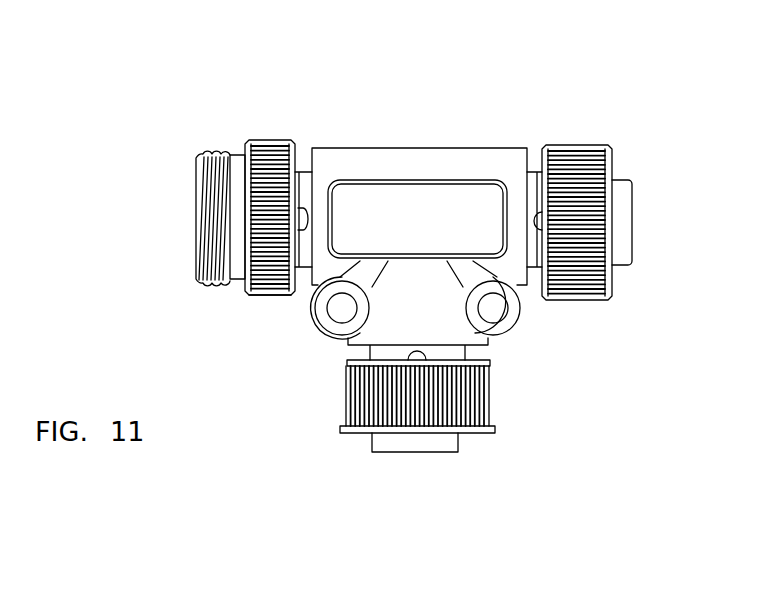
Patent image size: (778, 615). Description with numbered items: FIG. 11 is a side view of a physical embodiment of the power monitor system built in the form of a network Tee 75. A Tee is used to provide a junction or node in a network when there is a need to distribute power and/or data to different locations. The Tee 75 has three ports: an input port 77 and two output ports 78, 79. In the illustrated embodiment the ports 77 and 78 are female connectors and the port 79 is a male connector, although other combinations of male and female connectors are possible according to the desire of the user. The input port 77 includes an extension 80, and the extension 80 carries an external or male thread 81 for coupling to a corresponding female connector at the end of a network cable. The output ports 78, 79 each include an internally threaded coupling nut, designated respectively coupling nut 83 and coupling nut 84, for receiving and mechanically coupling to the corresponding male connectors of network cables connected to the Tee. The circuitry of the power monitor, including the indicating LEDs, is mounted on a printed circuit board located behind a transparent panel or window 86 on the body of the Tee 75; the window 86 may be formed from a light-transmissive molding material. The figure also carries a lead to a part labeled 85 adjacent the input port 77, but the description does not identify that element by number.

The Tee 75 is at (358, 147).
The input port 77 is at (283, 115).
The output port 78 is at (622, 118).
The output port 79 is at (450, 467).
The extension 80 is at (235, 282).
The external thread 81 is at (207, 152).
The coupling nut 83 is at (588, 302).
The coupling nut 84 is at (495, 397).
The nut rim 85 is at (270, 297).
The window 86 is at (485, 225).